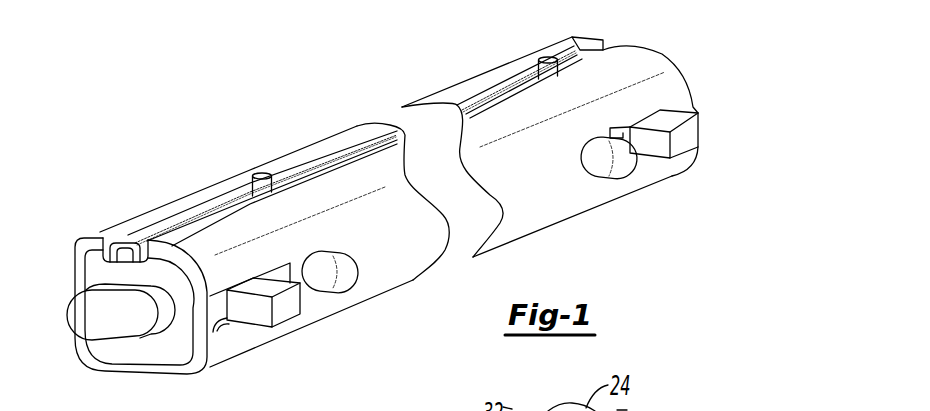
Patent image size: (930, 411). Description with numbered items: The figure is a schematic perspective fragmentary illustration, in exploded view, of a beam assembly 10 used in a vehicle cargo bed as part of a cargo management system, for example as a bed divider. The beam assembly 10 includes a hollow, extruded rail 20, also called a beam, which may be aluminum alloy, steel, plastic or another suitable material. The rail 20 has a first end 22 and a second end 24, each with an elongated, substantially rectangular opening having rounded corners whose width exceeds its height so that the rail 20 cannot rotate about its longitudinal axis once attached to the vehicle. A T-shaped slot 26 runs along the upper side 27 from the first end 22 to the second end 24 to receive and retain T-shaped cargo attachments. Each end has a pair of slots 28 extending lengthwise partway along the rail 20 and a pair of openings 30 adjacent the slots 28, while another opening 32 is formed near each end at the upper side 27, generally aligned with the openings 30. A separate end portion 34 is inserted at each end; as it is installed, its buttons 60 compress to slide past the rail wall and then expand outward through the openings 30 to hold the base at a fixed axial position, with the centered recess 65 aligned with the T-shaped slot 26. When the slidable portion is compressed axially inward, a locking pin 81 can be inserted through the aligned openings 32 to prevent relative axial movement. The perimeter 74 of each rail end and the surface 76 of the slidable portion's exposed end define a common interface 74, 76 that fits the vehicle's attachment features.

The beam assembly 10 is at (201, 96).
The rail 20 is at (300, 330).
The first end 22 is at (80, 240).
The second end 24 is at (593, 38).
The T-shaped slot 26 is at (128, 250).
The upper side 27 is at (190, 190).
The slots 28 is at (228, 320).
The openings 30 is at (313, 253).
The opening 32 is at (247, 196).
The end portion 34 is at (160, 350).
The buttons 60 is at (347, 273).
The centered recess 65 is at (120, 248).
The perimeter 74 is at (87, 348).
The surface 76 is at (82, 317).
The locking pin 81 is at (243, 177).